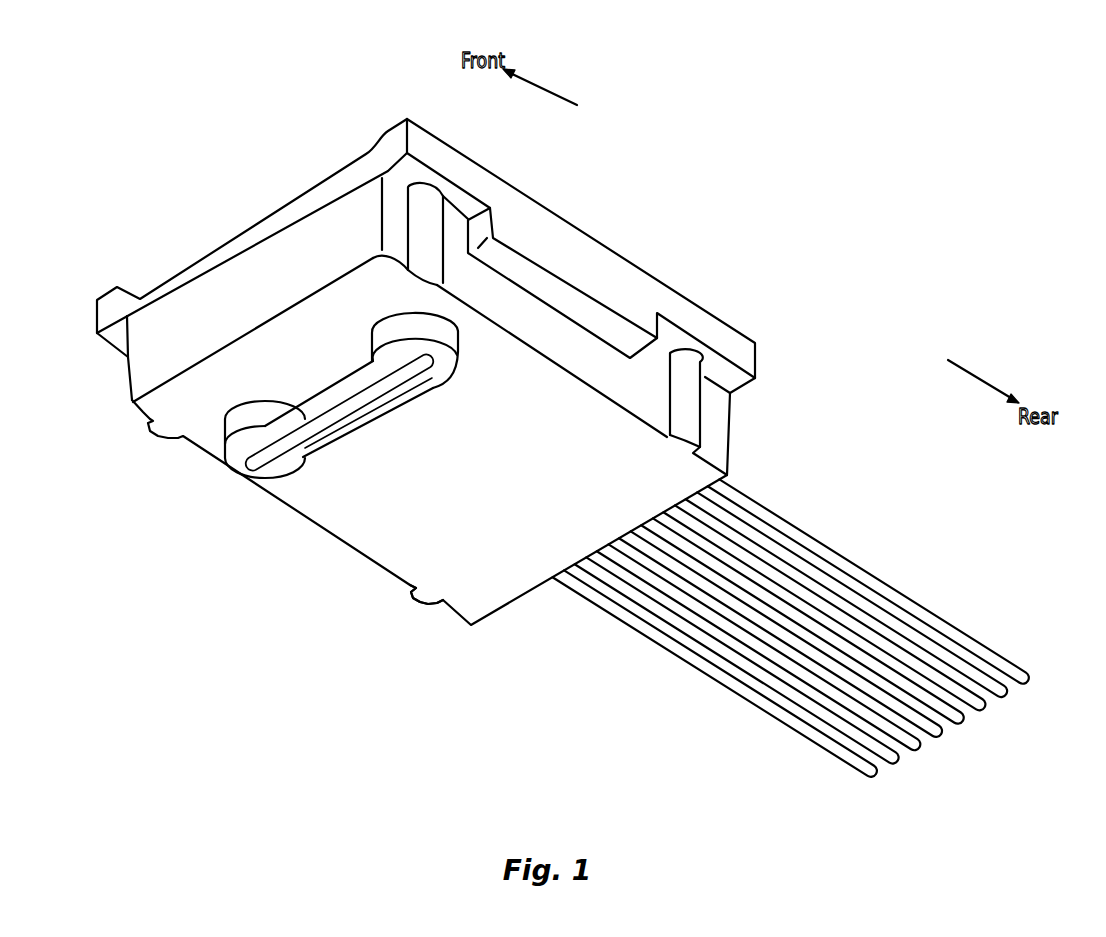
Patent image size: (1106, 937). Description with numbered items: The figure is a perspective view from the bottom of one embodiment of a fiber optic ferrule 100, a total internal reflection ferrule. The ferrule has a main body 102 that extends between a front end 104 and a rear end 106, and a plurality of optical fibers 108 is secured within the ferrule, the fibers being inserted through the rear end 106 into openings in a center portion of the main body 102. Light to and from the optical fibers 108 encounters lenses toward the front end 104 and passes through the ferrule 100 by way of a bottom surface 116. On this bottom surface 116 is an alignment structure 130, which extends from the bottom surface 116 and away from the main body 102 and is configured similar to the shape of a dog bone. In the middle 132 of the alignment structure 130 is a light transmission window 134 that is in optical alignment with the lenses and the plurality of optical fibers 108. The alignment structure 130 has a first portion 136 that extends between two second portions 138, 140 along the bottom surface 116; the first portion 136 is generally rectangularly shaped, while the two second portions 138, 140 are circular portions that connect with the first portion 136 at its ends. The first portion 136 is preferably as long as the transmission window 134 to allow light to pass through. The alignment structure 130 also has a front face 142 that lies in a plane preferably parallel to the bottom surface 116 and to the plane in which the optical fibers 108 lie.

The fiber optic ferrule 100 is at (535, 415).
The main body 102 is at (527, 503).
The front end 104 is at (135, 370).
The rear end 106 is at (730, 438).
The optical fibers 108 is at (874, 577).
The bottom surface 116 is at (386, 550).
The alignment structure 130 is at (268, 320).
The middle 132 is at (311, 359).
The light transmission window 134 is at (289, 445).
The first portion 136 is at (272, 402).
The second portion 138 is at (420, 318).
The second portion 140 is at (226, 436).
The front face 142 is at (446, 380).